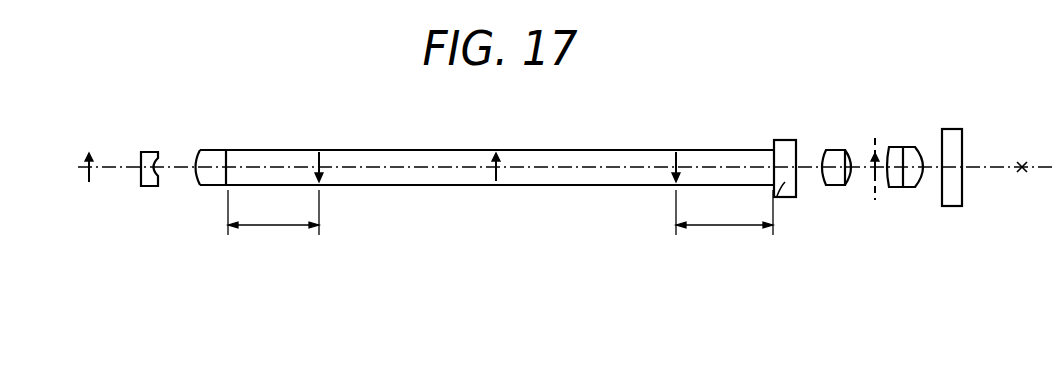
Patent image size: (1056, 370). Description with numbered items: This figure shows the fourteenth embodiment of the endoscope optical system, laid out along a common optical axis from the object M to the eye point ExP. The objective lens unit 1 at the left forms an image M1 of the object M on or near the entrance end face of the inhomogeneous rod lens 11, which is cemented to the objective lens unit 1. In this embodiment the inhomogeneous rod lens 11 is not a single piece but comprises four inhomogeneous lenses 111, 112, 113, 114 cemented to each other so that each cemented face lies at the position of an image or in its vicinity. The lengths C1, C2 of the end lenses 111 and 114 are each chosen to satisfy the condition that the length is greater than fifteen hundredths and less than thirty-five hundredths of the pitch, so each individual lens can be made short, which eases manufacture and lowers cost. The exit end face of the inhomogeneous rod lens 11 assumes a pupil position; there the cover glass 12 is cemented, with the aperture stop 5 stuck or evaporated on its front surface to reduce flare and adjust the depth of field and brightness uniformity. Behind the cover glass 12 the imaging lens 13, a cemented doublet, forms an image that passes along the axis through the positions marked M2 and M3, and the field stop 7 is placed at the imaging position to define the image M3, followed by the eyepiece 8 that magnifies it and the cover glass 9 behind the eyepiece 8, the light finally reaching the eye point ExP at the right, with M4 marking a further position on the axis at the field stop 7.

The object M is at (89, 152).
The objective lens unit 1 is at (138, 279).
The inhomogeneous rod lens 11 is at (776, 277).
The inhomogeneous lens 111 is at (320, 235).
The inhomogeneous lens 112 is at (495, 235).
The inhomogeneous lens 113 is at (675, 235).
The inhomogeneous lens 114 is at (776, 235).
The image M1 is at (317, 179).
The object image M2 is at (494, 152).
The image M3 is at (674, 179).
The fourth modulation position M4 is at (877, 180).
The length C1 is at (273, 212).
The length C2 is at (724, 212).
The cover glass 12 is at (785, 140).
The aperture stop 5 is at (782, 198).
The imaging lens 13 is at (833, 151).
The field stop 7 is at (876, 141).
The eyepiece 8 is at (910, 147).
The cover glass 9 is at (950, 129).
The eye point ExP is at (1022, 151).